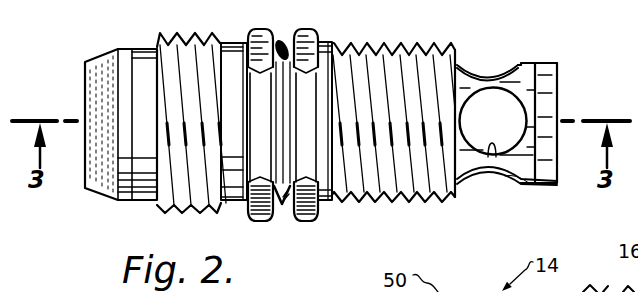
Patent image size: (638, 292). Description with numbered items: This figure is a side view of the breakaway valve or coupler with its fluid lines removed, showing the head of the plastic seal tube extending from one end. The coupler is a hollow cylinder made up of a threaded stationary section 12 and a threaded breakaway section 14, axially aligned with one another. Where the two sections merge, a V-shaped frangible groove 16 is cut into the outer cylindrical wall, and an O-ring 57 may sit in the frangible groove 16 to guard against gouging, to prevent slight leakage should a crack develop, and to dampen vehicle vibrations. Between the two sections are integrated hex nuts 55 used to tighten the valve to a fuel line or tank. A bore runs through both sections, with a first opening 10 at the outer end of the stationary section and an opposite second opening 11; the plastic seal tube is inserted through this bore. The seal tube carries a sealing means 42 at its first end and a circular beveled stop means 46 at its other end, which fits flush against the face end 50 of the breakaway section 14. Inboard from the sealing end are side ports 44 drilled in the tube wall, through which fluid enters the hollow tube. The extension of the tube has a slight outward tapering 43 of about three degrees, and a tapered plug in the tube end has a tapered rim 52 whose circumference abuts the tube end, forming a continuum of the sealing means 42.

The first opening 10 is at (458, 63).
The second opening 11 is at (152, 190).
The threaded stationary section 12 is at (390, 41).
The threaded breakaway section 14 is at (152, 38).
The frangible groove 16 is at (288, 158).
The sealing means 42 is at (574, 68).
The outward tapering 43 is at (529, 183).
The side ports 44 is at (503, 70).
The stop means 46 is at (97, 196).
The face end 50 is at (557, 102).
The tapered rim 52 is at (548, 185).
The integrated hex nut 55 is at (305, 28).
The O-ring 57 is at (282, 206).